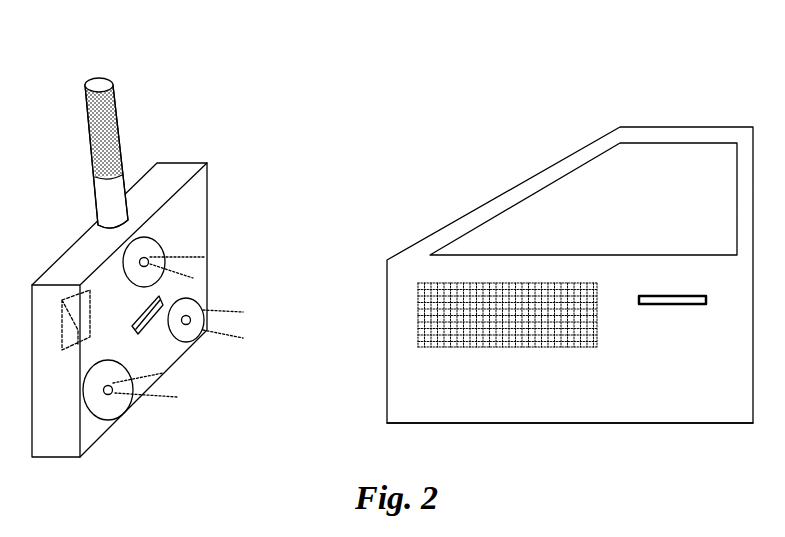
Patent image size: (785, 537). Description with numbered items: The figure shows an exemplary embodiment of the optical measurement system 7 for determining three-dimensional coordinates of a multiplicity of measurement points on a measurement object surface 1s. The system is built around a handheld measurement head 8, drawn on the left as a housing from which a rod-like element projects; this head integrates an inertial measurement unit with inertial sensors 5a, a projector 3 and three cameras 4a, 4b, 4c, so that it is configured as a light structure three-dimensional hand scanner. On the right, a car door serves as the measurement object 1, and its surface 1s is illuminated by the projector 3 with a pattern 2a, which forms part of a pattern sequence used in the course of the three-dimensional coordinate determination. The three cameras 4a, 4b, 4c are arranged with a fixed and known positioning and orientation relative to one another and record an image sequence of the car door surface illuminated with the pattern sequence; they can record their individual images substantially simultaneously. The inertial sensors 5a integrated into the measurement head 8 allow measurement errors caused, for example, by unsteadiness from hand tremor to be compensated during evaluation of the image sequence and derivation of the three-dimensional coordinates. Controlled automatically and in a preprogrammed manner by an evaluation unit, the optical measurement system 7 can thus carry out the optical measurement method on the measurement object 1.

The measurement object 1 is at (645, 108).
The measurement object surface 1s is at (572, 350).
The pattern 2a is at (430, 290).
The projector 3 is at (150, 327).
The camera 4a is at (152, 240).
The camera 4b is at (192, 307).
The camera 4c is at (108, 408).
The inertial sensors 5a is at (65, 290).
The optical measurement system 7 is at (145, 53).
The handheld measurement head 8 is at (52, 440).